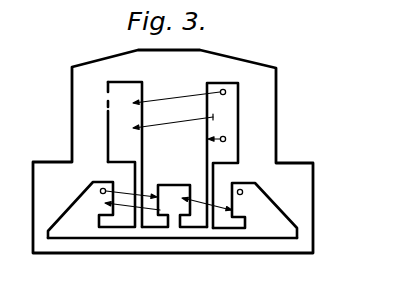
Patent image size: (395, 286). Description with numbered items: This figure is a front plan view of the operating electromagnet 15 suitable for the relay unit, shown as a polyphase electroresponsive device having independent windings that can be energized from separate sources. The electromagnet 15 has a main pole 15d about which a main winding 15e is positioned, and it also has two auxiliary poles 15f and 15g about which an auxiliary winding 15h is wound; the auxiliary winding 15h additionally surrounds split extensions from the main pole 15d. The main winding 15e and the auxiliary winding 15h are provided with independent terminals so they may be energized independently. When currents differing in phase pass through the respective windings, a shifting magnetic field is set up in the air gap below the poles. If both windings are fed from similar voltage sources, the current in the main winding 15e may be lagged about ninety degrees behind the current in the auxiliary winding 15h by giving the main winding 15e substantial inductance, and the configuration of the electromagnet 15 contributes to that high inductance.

The operating electromagnet 15 is at (270, 98).
The main pole 15d is at (210, 68).
The main winding 15e is at (160, 97).
The auxiliary pole 15f is at (123, 224).
The auxiliary pole 15g is at (232, 229).
The auxiliary winding 15h is at (233, 210).